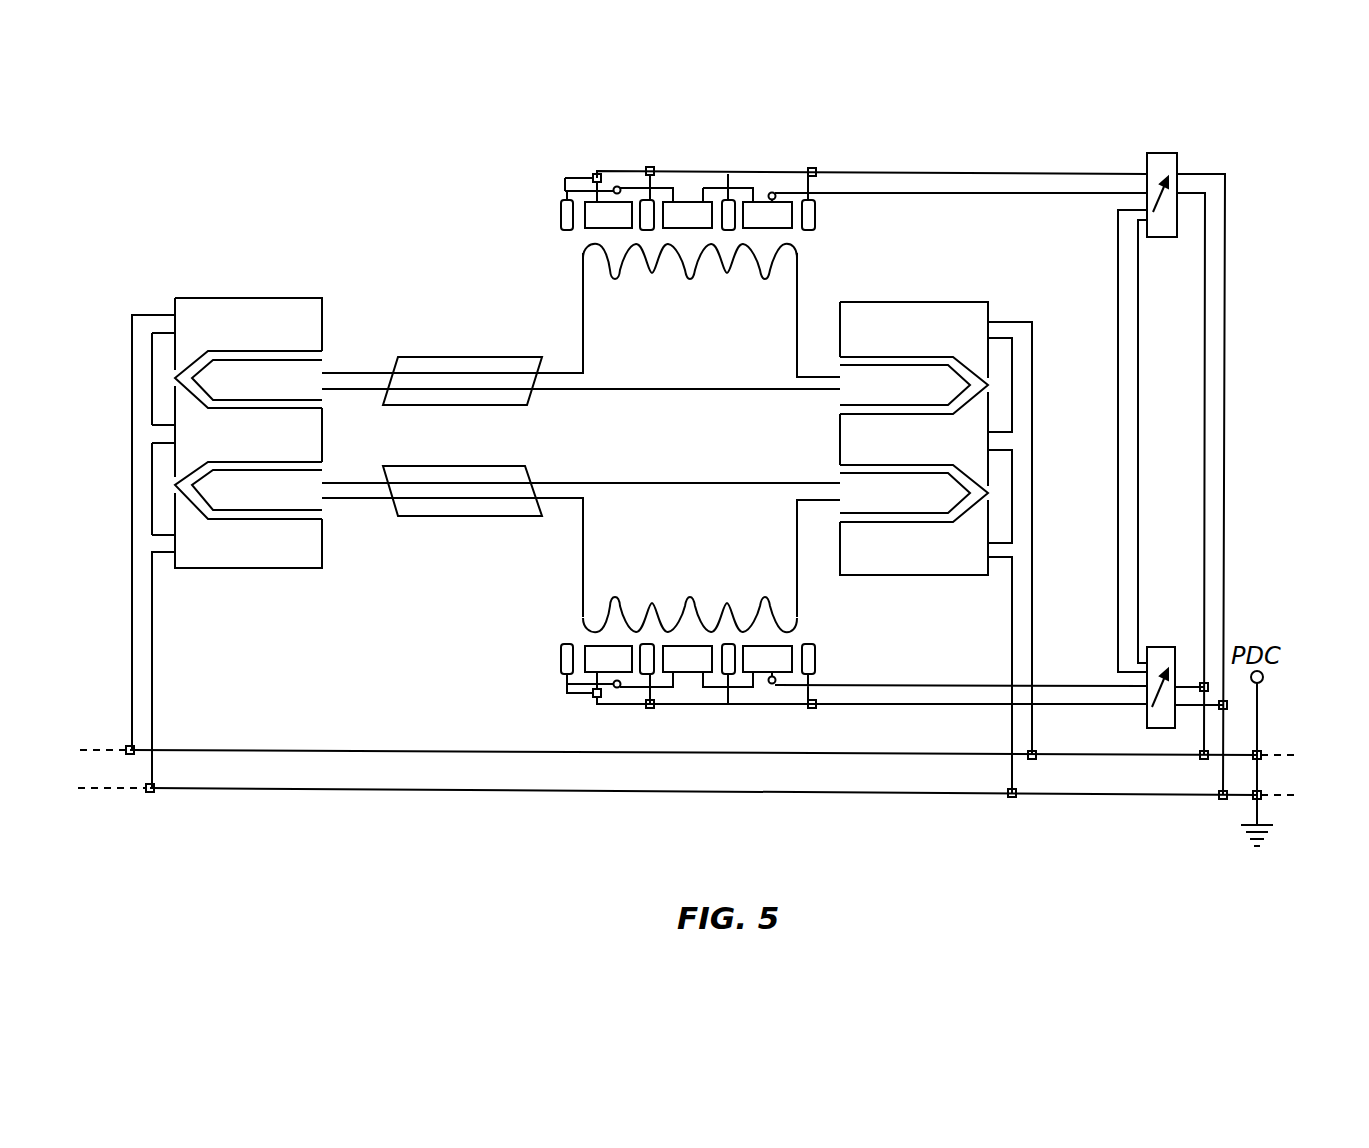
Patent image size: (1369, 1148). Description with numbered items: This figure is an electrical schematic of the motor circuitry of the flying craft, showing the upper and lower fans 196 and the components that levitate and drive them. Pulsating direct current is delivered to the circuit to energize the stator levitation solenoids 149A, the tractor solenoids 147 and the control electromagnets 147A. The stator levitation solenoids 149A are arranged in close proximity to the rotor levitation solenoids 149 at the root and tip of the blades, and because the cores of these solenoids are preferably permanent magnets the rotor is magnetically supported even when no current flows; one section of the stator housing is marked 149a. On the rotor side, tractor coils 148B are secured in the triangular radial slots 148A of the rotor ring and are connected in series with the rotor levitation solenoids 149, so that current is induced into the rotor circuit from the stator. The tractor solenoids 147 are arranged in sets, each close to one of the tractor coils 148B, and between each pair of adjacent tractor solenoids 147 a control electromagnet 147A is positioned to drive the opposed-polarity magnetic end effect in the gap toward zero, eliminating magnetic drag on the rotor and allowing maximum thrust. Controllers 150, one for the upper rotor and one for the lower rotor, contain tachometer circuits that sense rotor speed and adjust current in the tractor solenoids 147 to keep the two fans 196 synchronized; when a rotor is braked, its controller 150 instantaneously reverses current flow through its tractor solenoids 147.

The tractor solenoid 147 is at (592, 207).
The control electromagnet 147A is at (648, 212).
The radial slot 148A is at (782, 290).
The tractor coil 148B is at (782, 585).
The rotor levitation solenoid 149 is at (308, 370).
The stator levitation solenoid 149A is at (323, 323).
The connector housing section 149a is at (853, 440).
The controller 150 is at (1165, 153).
The fan 196 is at (528, 400).